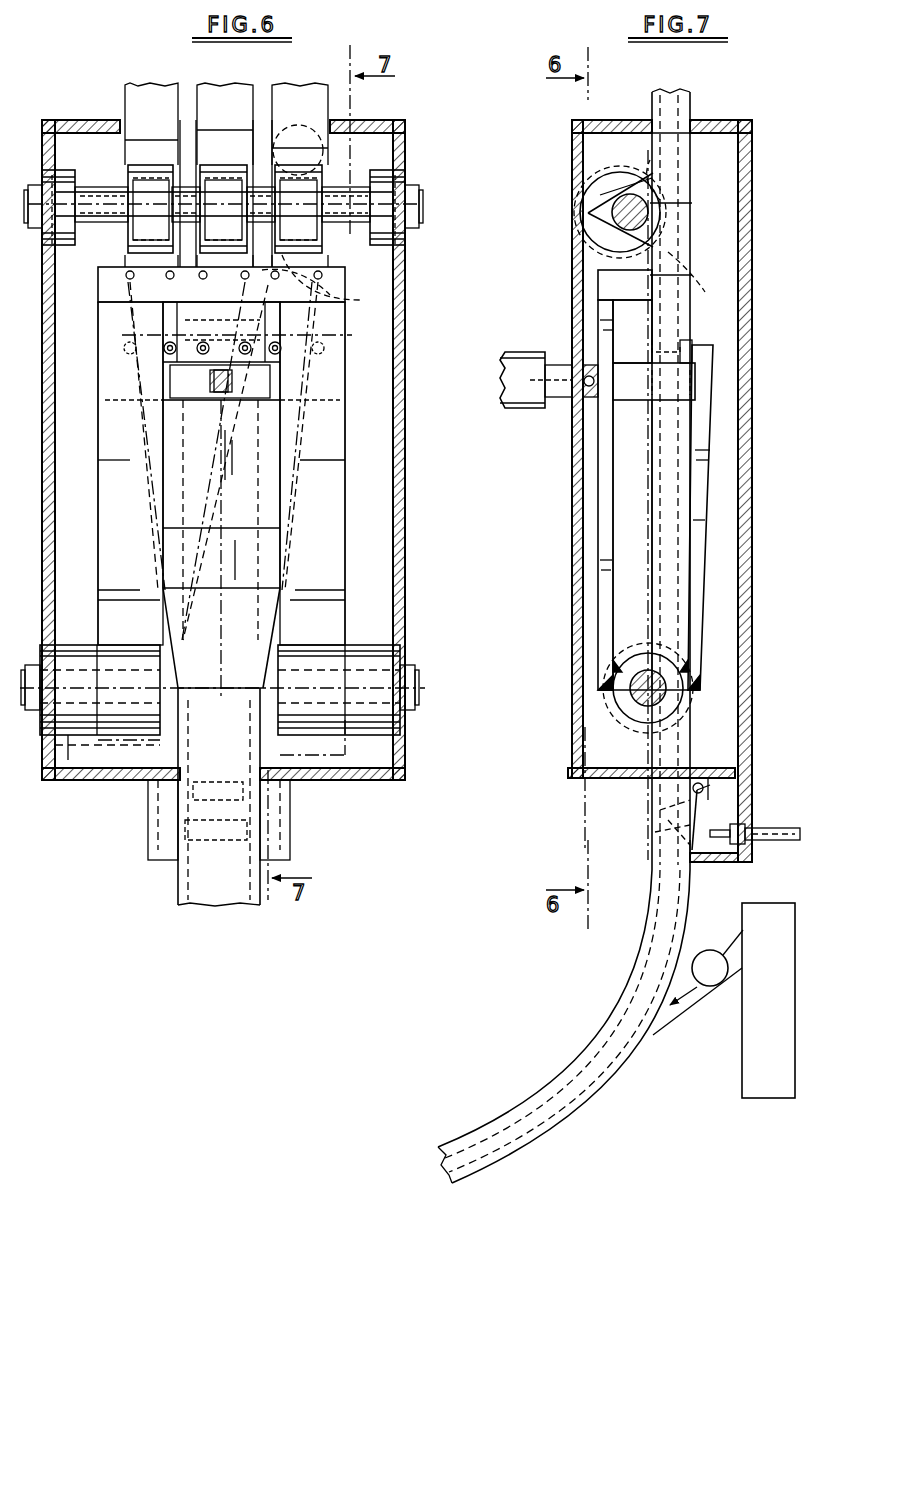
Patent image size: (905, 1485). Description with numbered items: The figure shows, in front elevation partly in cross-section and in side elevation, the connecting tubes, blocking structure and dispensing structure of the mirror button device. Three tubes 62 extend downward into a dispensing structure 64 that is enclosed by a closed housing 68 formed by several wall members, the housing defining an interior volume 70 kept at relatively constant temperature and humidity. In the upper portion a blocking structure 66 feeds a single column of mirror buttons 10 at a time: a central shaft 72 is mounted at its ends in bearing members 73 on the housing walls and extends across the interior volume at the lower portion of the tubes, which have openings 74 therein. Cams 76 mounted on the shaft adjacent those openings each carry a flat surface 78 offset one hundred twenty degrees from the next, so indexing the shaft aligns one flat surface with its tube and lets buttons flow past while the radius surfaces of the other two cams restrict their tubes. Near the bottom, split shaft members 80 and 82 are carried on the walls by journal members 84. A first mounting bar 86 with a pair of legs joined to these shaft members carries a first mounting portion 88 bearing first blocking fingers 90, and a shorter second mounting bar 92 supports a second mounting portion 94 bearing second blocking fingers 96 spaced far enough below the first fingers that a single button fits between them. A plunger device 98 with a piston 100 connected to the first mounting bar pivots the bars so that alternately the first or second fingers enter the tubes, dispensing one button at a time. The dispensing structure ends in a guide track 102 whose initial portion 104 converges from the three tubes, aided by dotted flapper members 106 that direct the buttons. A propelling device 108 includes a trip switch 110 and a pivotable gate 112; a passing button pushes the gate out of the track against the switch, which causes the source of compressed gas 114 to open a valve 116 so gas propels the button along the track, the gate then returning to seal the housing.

In FIG. 6, the mirror button 10 is at (328, 108).
In FIG. 7, the mirror button 10 is at (692, 293).
In FIG. 6, the tube 62 is at (148, 92).
In FIG. 7, the tube 62 is at (671, 479).
In FIG. 6, the dispensing structure 64 is at (410, 312).
In FIG. 7, the dispensing structure 64 is at (574, 326).
In FIG. 6, the blocking structure 66 is at (417, 183).
In FIG. 7, the blocking structure 66 is at (612, 186).
In FIG. 6, the closed housing 68 is at (84, 120).
In FIG. 7, the closed housing 68 is at (618, 120).
In FIG. 6, the interior volume 70 is at (372, 448).
In FIG. 7, the interior volume 70 is at (725, 470).
In FIG. 6, the central shaft 72 is at (410, 205).
In FIG. 6, the bearing member 73 is at (400, 228).
In FIG. 6, the opening 74 is at (140, 170).
In FIG. 7, the opening 74 is at (628, 172).
In FIG. 6, the cam 76 is at (312, 200).
In FIG. 7, the cam 76 is at (605, 230).
In FIG. 6, the flat surface 78 is at (142, 185).
In FIG. 7, the flat surface 78 is at (616, 190).
In FIG. 6, the split shaft member 80 is at (70, 735).
In FIG. 6, the split shaft member 82 is at (412, 685).
In FIG. 7, the split shaft member 82 is at (640, 705).
In FIG. 6, the journal member 84 is at (72, 655).
In FIG. 7, the journal member 84 is at (670, 618).
In FIG. 6, the first mounting bar 86 is at (102, 576).
In FIG. 7, the first mounting bar 86 is at (608, 517).
In FIG. 6, the first mounting portion 88 is at (270, 290).
In FIG. 7, the first mounting portion 88 is at (600, 284).
In FIG. 6, the first blocking finger 90 is at (221, 351).
In FIG. 7, the first blocking finger 90 is at (626, 331).
In FIG. 7, the second mounting bar 92 is at (700, 518).
In FIG. 6, the second mounting portion 94 is at (262, 352).
In FIG. 7, the second mounting portion 94 is at (715, 386).
In FIG. 6, the second blocking finger 96 is at (283, 347).
In FIG. 7, the second blocking finger 96 is at (698, 348).
In FIG. 7, the plunger device 98 is at (508, 380).
In FIG. 6, the piston 100 is at (224, 395).
In FIG. 7, the piston 100 is at (562, 400).
In FIG. 6, the guide track 102 is at (178, 888).
In FIG. 7, the guide track 102 is at (545, 1125).
In FIG. 6, the initial portion 104 is at (172, 683).
In FIG. 6, the flapper member 106 is at (232, 478).
In FIG. 7, the propelling device 108 is at (757, 805).
In FIG. 7, the trip switch 110 is at (762, 842).
In FIG. 7, the pivotable gate 112 is at (700, 800).
In FIG. 7, the source of compressed gas 114 is at (760, 903).
In FIG. 7, the valve 116 is at (712, 950).